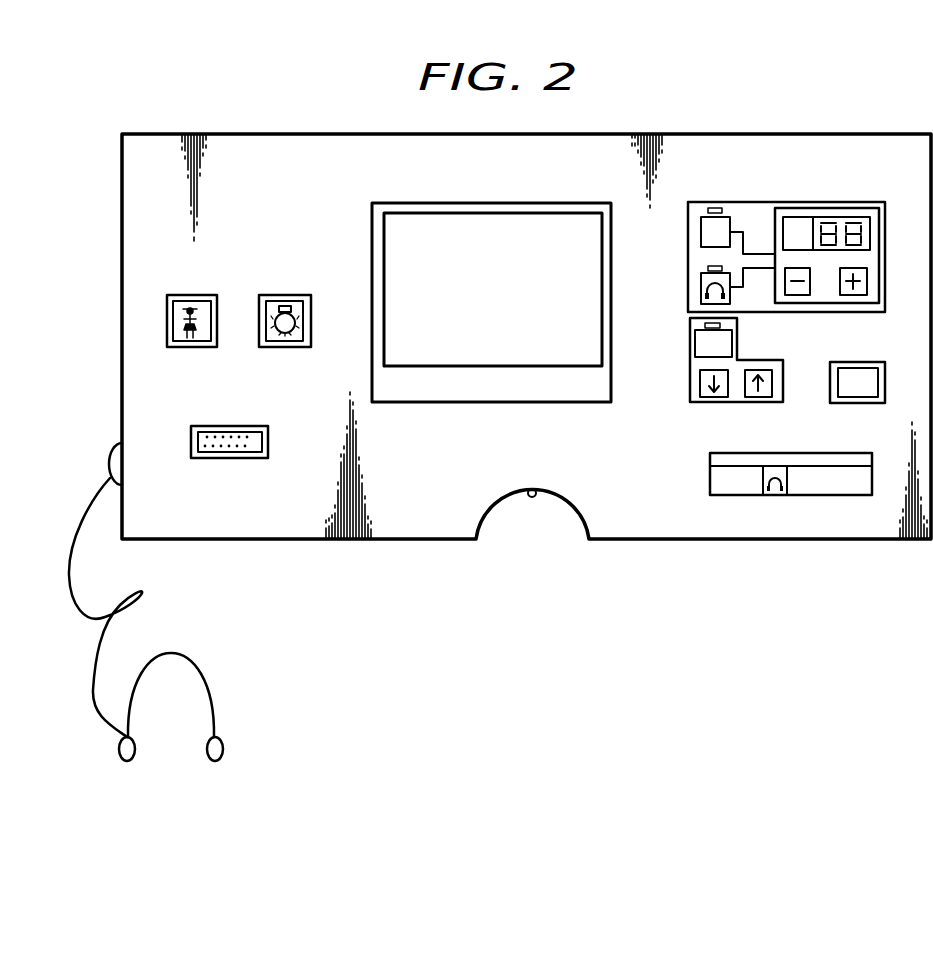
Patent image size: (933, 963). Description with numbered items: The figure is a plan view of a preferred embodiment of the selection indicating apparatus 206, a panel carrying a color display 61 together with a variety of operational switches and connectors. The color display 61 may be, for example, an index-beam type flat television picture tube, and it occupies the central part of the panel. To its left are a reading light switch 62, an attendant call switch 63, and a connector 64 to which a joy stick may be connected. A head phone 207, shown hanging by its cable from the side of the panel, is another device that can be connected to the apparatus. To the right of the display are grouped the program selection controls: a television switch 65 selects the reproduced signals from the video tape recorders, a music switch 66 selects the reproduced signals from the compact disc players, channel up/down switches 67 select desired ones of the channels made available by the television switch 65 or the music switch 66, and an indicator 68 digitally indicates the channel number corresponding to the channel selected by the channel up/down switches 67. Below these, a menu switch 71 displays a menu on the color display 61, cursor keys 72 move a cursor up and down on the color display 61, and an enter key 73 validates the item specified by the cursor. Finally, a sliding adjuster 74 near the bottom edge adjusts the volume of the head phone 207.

The selection indicating apparatus 206 is at (445, 528).
The head phone 207 is at (223, 746).
The color display 61 is at (450, 358).
The reading light switch 62 is at (297, 340).
The attendant call switch 63 is at (206, 338).
The connector 64 is at (242, 448).
The television switch 65 is at (699, 237).
The music switch 66 is at (699, 287).
The channel up/down switches 67 is at (796, 295).
The indicator 68 is at (867, 228).
The menu switch 71 is at (695, 333).
The cursor keys 72 is at (700, 385).
The enter key 73 is at (865, 397).
The sliding adjuster 74 is at (815, 495).